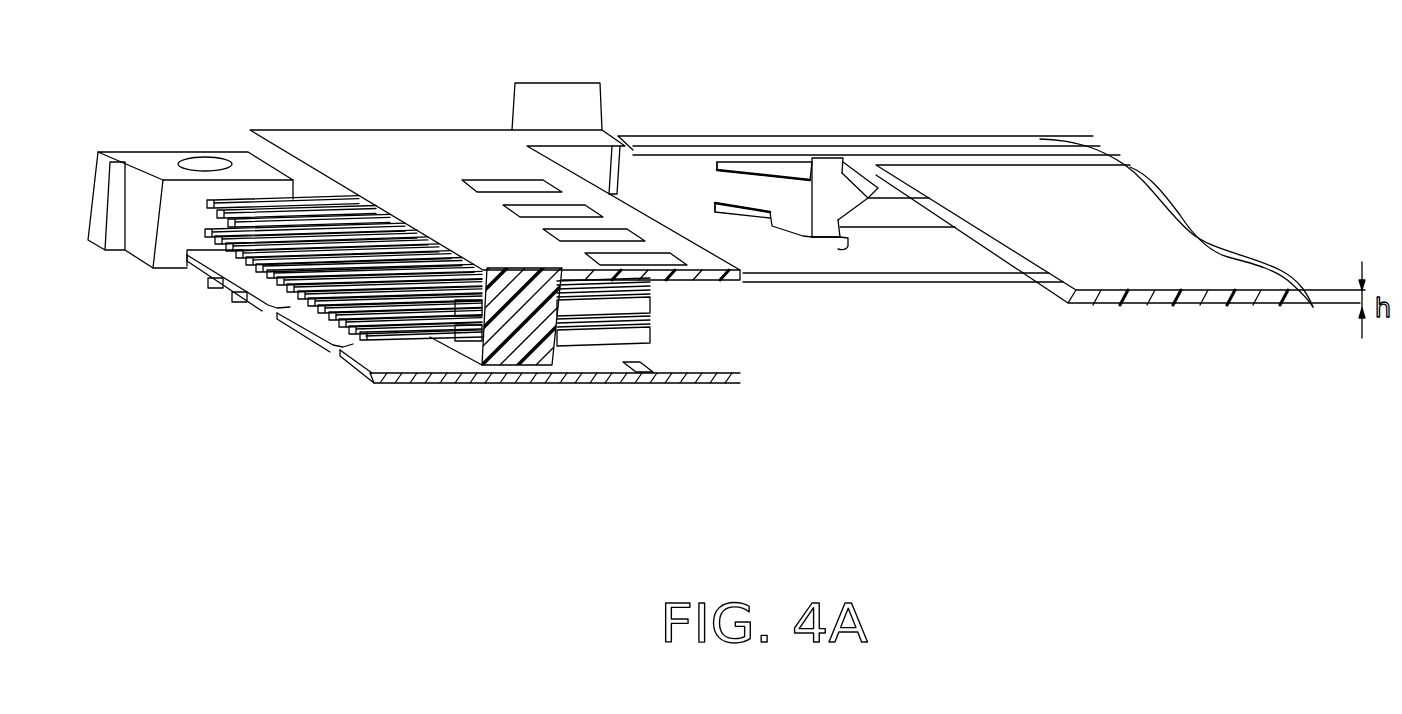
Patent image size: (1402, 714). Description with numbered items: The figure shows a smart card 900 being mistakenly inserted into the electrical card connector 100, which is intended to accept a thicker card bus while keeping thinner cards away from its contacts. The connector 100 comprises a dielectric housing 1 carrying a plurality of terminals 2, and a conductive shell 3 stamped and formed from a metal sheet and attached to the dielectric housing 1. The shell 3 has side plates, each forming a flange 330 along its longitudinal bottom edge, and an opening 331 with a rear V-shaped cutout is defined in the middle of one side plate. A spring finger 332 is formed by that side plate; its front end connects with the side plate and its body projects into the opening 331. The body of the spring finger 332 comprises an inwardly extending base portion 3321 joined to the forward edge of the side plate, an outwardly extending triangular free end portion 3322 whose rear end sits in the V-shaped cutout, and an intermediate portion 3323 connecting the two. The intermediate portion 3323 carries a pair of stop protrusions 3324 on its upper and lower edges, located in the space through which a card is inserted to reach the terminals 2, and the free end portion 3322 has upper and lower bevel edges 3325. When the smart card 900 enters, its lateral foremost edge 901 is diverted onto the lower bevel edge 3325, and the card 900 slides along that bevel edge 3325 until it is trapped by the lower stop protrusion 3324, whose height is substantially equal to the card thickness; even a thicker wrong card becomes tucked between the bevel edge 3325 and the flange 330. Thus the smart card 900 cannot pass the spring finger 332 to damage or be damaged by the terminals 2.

The dielectric housing 1 is at (520, 327).
The terminals 2 is at (267, 272).
The conductive shell 3 is at (1013, 143).
The electrical card connector 100 is at (378, 140).
The flange 330 is at (1047, 143).
The opening 331 is at (717, 195).
The spring finger 332 is at (747, 190).
The base portion 3321 is at (783, 200).
The triangular free end portion 3322 is at (872, 172).
The intermediate portion 3323 is at (814, 175).
The stop protrusions 3324 is at (831, 195).
The bevel edges 3325 is at (845, 238).
The smart card 900 is at (1158, 311).
The lateral foremost edge 901 is at (893, 215).